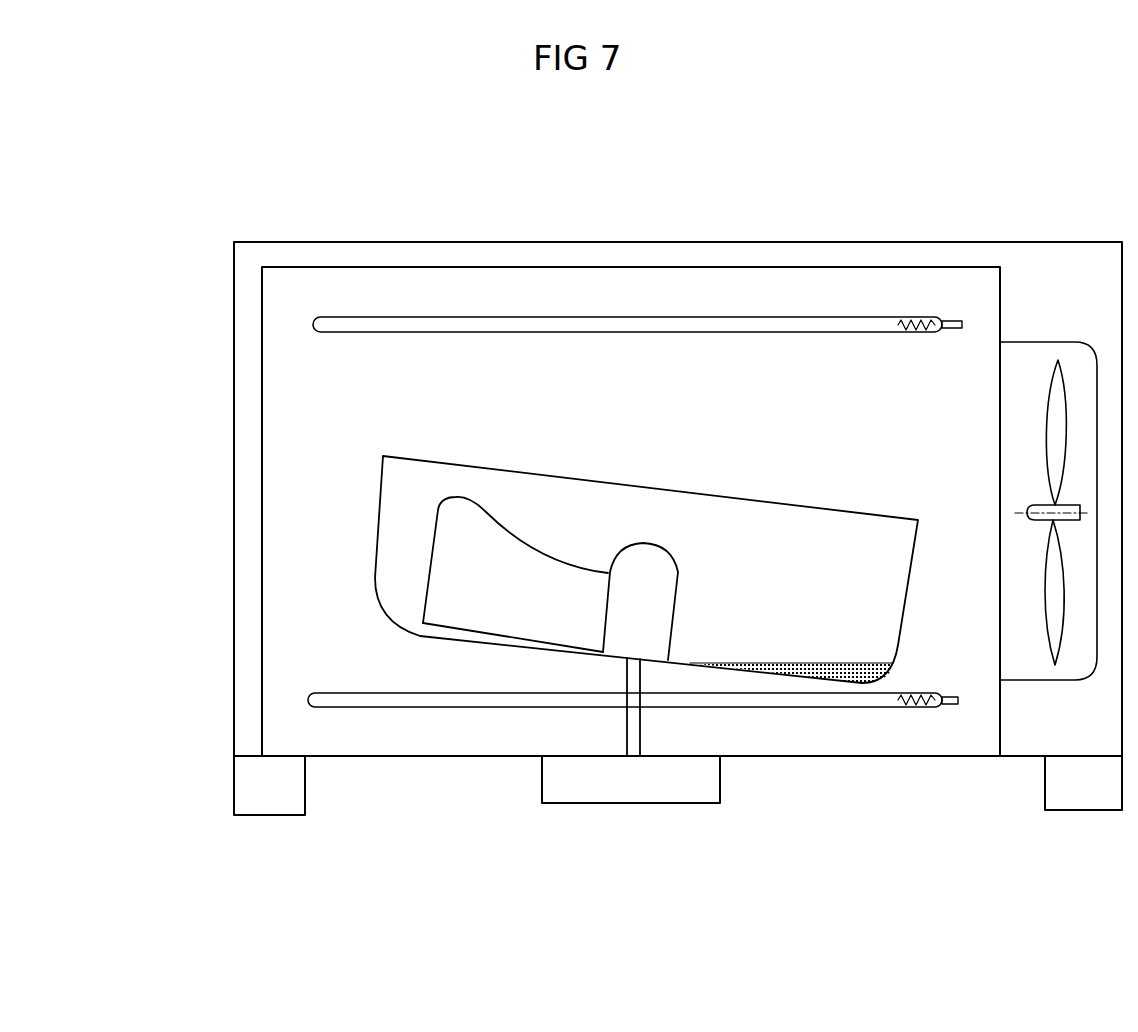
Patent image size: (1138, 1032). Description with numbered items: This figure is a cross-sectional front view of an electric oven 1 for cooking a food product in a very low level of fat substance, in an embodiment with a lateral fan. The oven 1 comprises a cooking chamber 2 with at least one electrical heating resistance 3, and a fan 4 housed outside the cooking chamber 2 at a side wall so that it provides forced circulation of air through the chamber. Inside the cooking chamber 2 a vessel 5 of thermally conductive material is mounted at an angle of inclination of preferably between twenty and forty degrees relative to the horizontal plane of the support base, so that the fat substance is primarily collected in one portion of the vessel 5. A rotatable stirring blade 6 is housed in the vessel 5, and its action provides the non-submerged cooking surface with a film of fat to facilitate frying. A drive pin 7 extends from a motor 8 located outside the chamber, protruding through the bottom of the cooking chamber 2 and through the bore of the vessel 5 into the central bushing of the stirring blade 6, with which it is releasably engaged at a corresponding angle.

The electric oven 1 is at (196, 280).
The cooking chamber 2 is at (308, 425).
The electrical heating resistance 3 is at (446, 310).
The fan 4 is at (1056, 356).
The vessel 5 is at (368, 573).
The stirring blade 6 is at (475, 603).
The drive pin 7 is at (614, 726).
The motor 8 is at (580, 806).